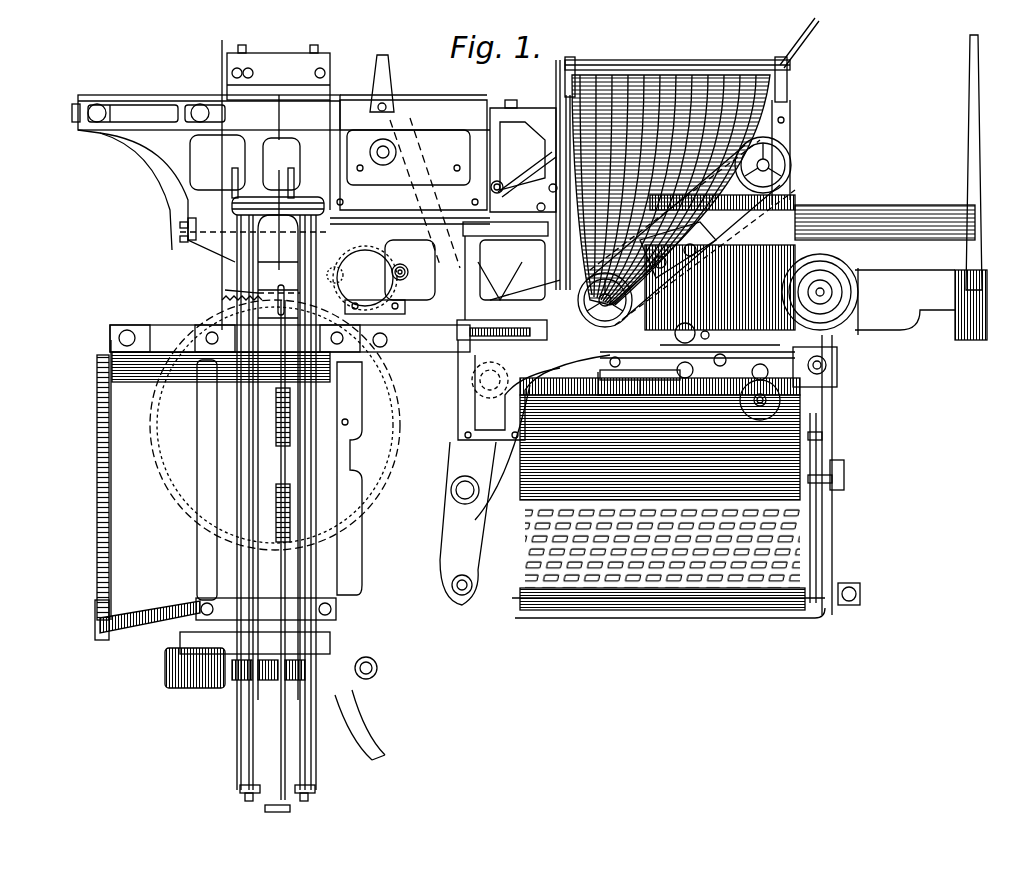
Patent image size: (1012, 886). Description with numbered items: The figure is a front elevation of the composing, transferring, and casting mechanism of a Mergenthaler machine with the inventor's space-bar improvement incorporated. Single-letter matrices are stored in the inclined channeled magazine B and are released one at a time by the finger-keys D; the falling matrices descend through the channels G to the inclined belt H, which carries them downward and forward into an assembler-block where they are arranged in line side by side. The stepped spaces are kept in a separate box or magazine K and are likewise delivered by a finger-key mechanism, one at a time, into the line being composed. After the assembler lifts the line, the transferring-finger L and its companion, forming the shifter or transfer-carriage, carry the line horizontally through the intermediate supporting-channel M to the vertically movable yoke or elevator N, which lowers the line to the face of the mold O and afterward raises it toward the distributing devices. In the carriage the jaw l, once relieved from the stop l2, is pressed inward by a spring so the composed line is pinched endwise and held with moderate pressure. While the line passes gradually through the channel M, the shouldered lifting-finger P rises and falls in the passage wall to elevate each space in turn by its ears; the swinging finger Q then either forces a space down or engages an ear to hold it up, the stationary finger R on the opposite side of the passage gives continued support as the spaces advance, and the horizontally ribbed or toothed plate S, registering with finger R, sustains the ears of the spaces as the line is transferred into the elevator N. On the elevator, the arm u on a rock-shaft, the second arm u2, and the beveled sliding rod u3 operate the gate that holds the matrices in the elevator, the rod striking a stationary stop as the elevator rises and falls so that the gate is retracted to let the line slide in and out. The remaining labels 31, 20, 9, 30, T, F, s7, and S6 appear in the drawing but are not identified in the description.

The rod 31 is at (222, 200).
The spring rod 20 is at (279, 318).
The toothed plate S is at (248, 178).
The finger Q is at (345, 215).
The shaft 9 is at (400, 300).
The space magazine K is at (523, 156).
The inclined channeled magazine B is at (692, 111).
The channels G is at (671, 190).
The inclined belt H is at (798, 168).
The direction arrow 30 is at (130, 207).
The sliding rod u3 is at (190, 222).
The second arm u2 is at (210, 226).
The arm u is at (240, 232).
The elevator N is at (185, 545).
The stationary finger R is at (330, 235).
The lifting-finger P is at (365, 278).
The intermediate supporting-channel M is at (410, 223).
The transferring-finger L is at (494, 268).
The stop l2 is at (512, 269).
The jaw l is at (519, 281).
The bracket T is at (502, 335).
The frame arm F is at (525, 472).
The mold O is at (275, 425).
The spring s7 is at (274, 417).
The bar S6 is at (233, 282).
The finger-keys D is at (672, 522).